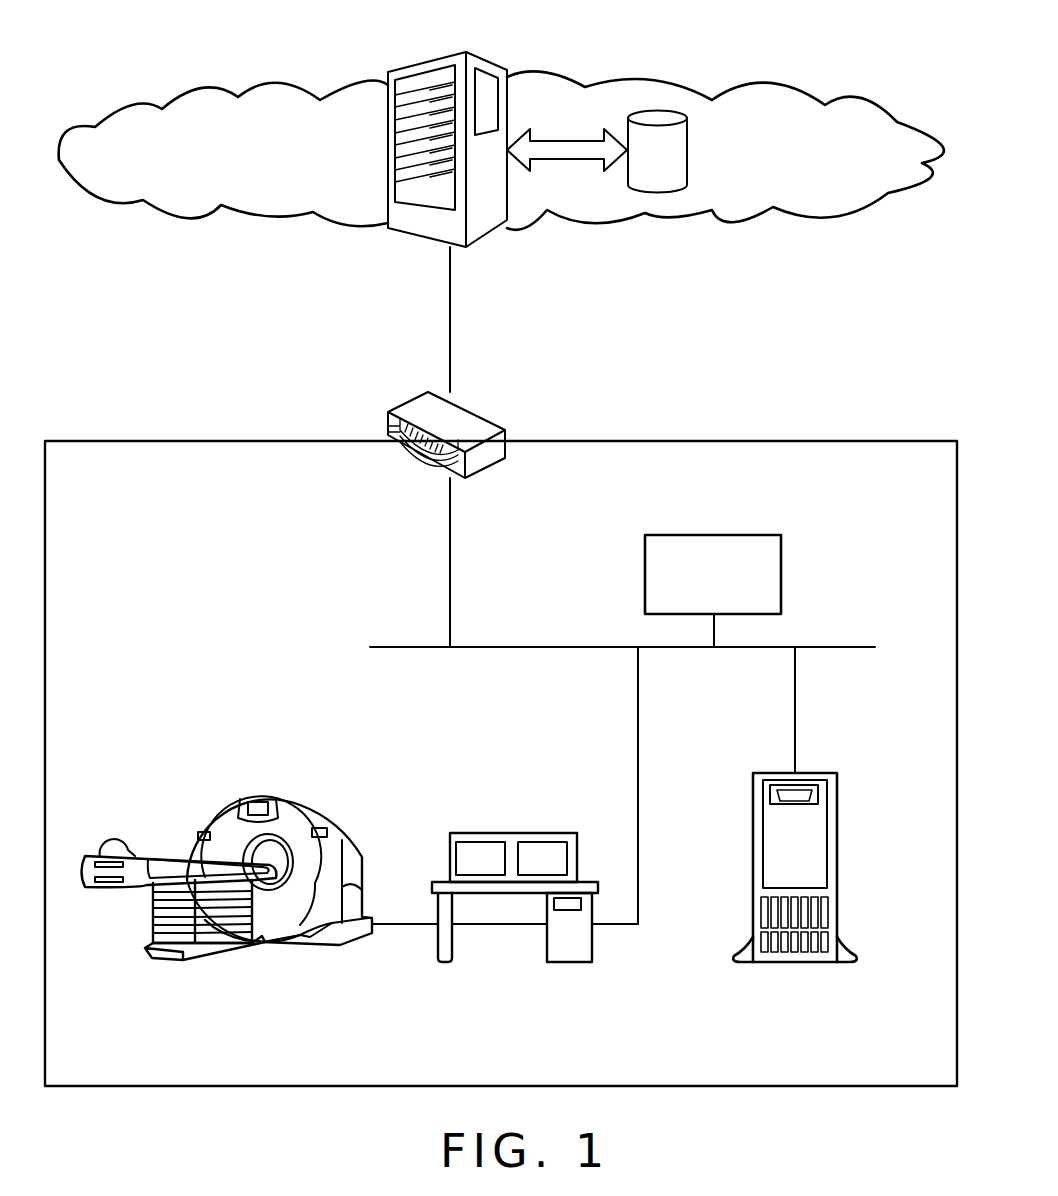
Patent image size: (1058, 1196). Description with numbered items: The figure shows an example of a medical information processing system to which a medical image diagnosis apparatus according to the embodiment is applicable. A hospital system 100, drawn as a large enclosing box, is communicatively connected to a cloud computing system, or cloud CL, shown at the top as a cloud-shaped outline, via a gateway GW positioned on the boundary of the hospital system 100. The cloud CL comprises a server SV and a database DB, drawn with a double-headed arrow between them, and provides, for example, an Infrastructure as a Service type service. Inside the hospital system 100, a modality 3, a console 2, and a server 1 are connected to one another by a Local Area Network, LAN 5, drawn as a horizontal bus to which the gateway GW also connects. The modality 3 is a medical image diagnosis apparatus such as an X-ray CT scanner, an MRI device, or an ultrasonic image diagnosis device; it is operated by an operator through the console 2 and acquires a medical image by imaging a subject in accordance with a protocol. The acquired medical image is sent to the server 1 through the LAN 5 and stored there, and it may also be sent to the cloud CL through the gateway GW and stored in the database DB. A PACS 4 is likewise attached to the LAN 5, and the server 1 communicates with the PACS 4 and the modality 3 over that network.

The cloud computing system CL is at (561, 75).
The server SV is at (388, 150).
The database DB is at (687, 150).
The gateway GW is at (467, 412).
The hospital system 100 is at (933, 441).
The Local Area Network (LAN) 5 is at (570, 647).
The PACS 4 is at (781, 576).
The server 1 is at (838, 788).
The console 2 is at (513, 833).
The modality 3 is at (283, 797).